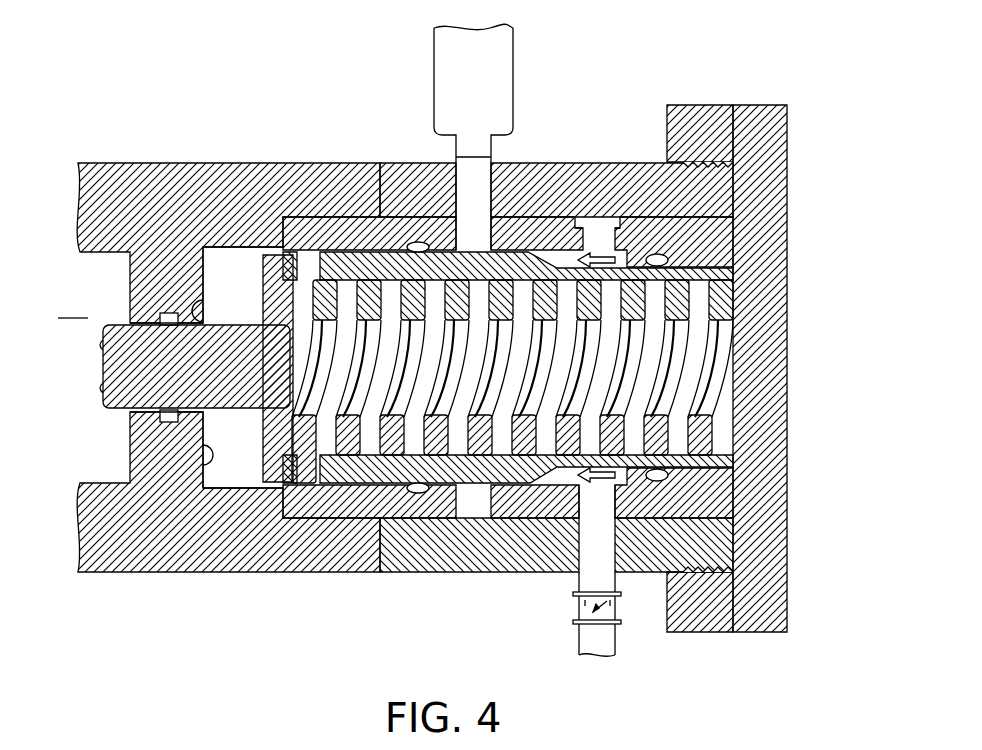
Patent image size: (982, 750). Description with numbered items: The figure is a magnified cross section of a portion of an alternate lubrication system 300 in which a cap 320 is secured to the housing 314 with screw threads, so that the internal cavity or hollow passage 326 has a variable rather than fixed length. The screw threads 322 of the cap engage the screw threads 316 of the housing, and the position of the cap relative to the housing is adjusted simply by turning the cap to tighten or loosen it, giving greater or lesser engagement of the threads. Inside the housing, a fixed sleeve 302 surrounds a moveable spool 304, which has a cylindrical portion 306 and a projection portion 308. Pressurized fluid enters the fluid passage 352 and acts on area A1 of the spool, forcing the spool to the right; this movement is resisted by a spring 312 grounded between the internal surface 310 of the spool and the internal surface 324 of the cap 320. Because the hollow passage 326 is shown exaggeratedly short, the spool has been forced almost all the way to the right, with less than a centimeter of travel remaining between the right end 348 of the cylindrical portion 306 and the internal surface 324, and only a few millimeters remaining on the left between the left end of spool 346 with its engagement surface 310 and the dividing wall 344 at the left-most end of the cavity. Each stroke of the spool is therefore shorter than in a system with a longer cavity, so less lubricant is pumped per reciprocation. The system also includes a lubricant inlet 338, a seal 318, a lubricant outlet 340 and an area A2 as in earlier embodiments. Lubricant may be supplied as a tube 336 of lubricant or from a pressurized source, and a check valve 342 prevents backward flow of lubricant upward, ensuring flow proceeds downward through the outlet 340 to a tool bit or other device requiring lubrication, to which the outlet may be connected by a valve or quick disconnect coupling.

The lubrication system 300 is at (246, 116).
The fixed sleeve 302 is at (540, 218).
The moveable spool 304 is at (340, 490).
The cylindrical portion 306 is at (470, 540).
The projection portion 308 is at (115, 392).
The internal surface 310 is at (258, 425).
The spring 312 is at (310, 372).
The housing 314 is at (122, 578).
The screw threads 316 is at (735, 176).
The seal 318 is at (700, 252).
The cap 320 is at (775, 362).
The screw threads 322 is at (683, 160).
The internal surface 324 is at (740, 255).
The internal cavity or hollow passage 326 is at (238, 303).
The tube of lubricant 336 is at (452, 66).
The lubricant inlet 338 is at (470, 175).
The lubricant outlet 340 is at (597, 495).
The check valve 342 is at (578, 615).
The dividing wall 344 is at (208, 445).
The left end of spool 346 is at (250, 482).
The right end 348 is at (724, 270).
The fluid passage 352 is at (72, 308).
The area A1 is at (113, 350).
The area A2 is at (593, 512).